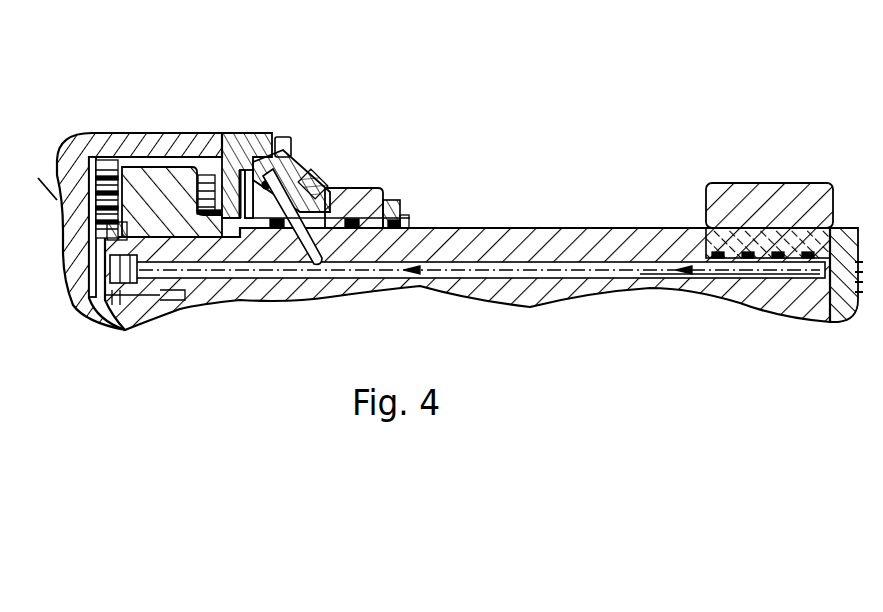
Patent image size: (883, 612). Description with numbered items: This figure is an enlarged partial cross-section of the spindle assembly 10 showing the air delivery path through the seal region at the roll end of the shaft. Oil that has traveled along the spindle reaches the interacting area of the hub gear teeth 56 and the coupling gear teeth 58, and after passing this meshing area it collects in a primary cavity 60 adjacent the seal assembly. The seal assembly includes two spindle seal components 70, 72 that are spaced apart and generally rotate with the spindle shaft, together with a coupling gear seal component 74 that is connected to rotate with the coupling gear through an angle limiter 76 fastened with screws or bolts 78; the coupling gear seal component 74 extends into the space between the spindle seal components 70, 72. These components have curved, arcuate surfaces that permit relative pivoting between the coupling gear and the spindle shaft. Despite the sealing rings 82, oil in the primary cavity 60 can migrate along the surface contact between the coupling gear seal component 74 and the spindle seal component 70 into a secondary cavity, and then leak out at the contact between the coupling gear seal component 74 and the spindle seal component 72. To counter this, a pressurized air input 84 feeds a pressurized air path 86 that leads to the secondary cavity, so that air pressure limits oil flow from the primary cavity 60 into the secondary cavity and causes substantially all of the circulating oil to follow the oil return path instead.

The main body 10 is at (556, 238).
The hub gear teeth 56 is at (172, 185).
The coupling gear teeth 58 is at (115, 163).
The primary cavity 60 is at (250, 168).
The spindle seal component 70 is at (258, 235).
The spindle seal component 72 is at (325, 188).
The coupling gear seal component 74 is at (302, 184).
The angle limiter 76 is at (233, 150).
The screws/bolts 78 is at (283, 188).
The sealing rings 82 is at (320, 170).
The pressurized air input 84 is at (805, 247).
The pressurized air path 86 is at (652, 240).